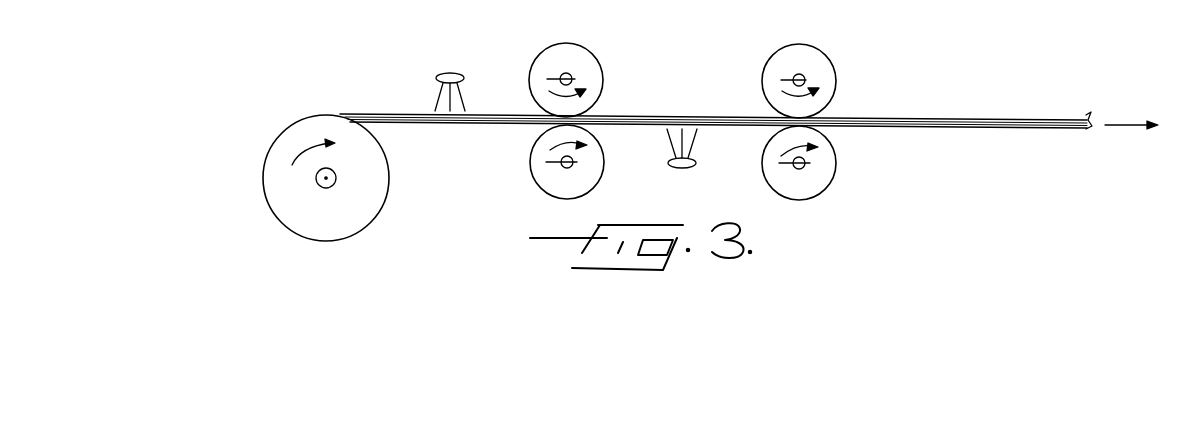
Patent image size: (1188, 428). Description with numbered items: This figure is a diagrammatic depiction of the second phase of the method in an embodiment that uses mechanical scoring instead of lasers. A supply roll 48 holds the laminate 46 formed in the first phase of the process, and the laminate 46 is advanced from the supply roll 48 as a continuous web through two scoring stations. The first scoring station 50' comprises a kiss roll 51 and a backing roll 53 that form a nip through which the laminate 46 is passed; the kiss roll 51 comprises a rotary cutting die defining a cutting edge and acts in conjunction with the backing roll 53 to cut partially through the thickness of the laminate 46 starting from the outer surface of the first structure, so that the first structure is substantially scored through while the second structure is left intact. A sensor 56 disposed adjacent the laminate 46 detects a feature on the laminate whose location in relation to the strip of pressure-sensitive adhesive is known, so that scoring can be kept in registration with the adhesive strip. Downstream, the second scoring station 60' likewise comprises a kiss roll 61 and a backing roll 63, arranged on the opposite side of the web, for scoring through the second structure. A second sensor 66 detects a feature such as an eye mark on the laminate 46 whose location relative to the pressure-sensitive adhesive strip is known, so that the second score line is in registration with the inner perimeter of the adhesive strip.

The laminate 46 is at (736, 93).
The supply roll 48 is at (282, 178).
The first scoring station 50' is at (573, 107).
The kiss roll 51 is at (603, 80).
The backing roll 53 is at (533, 170).
The sensor 56 is at (435, 62).
The second scoring station 60' is at (849, 116).
The kiss roll 61 is at (836, 167).
The backing roll 63 is at (843, 81).
The sensor 66 is at (652, 169).